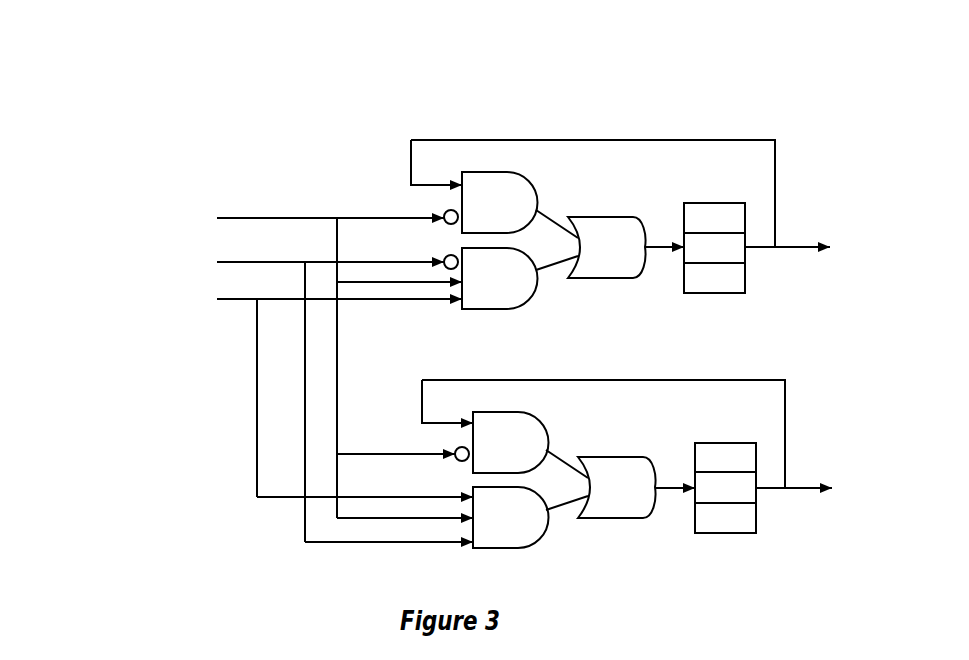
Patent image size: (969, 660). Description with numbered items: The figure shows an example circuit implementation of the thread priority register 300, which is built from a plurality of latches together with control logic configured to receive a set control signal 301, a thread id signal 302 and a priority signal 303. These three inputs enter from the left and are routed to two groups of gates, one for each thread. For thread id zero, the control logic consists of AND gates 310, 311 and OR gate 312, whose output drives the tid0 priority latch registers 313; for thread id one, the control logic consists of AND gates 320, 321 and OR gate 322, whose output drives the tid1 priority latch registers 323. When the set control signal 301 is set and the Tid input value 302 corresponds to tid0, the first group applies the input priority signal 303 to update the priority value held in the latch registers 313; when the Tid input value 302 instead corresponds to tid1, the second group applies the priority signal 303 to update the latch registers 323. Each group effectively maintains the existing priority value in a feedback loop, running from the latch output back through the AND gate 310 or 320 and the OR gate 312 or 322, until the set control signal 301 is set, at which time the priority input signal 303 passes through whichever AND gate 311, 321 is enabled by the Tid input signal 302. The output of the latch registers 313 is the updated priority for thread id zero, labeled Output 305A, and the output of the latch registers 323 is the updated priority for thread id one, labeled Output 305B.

The thread priority register 300 is at (808, 92).
The set control signal 301 is at (203, 226).
The thread id signal 302 is at (203, 271).
The priority signal 303 is at (203, 308).
The output of Tid 0 priority latches 305A is at (881, 237).
The output of Tid 1 priority latches 305B is at (893, 477).
The AND gate 310 is at (511, 227).
The AND gate 311 is at (511, 302).
The OR gate 312 is at (621, 272).
The tid0 priority latch registers 313 is at (720, 203).
The AND gate 320 is at (521, 464).
The AND gate 321 is at (521, 541).
The OR gate 322 is at (632, 511).
The tid1 priority latch registers 323 is at (730, 443).